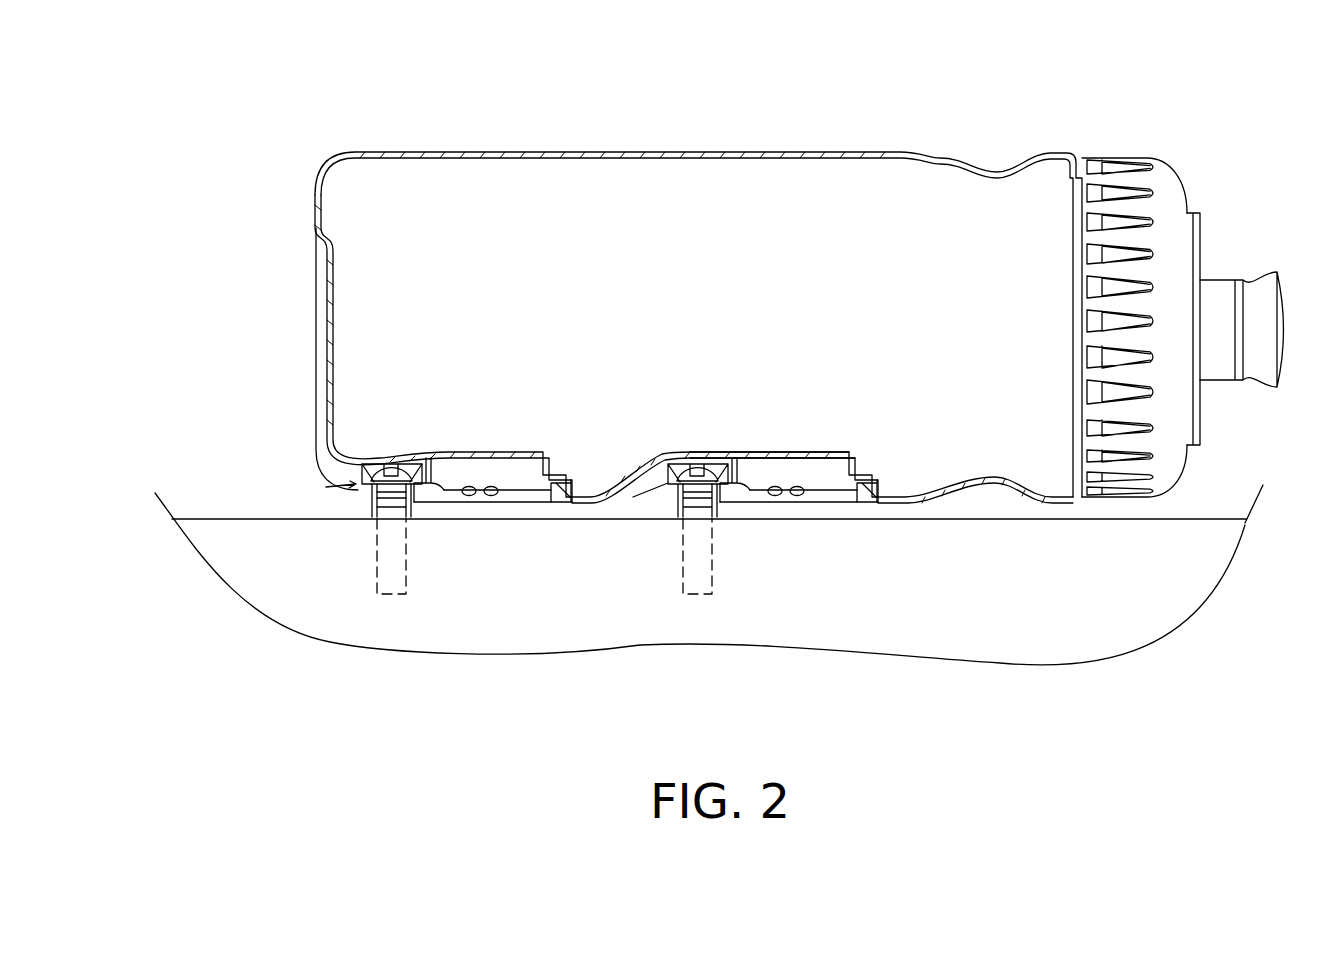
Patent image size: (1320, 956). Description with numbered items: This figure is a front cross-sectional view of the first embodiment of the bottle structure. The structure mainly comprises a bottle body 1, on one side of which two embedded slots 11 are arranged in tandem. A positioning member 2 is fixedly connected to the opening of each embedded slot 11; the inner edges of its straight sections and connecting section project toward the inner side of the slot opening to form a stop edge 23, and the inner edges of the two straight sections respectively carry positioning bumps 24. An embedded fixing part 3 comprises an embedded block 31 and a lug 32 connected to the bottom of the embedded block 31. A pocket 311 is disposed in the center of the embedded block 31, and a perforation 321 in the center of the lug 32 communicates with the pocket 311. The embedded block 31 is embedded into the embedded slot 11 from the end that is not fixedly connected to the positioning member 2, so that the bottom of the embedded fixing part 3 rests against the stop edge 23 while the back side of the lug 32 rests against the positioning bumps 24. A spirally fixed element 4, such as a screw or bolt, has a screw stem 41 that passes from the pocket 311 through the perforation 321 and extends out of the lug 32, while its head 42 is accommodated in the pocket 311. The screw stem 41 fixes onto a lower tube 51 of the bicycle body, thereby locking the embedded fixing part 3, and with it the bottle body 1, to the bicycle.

The bottle body 1 is at (700, 152).
The embedded slot 11 is at (748, 473).
The positioning member 2 is at (870, 498).
The stop edge 23 is at (833, 497).
The positioning bumps 24 is at (797, 495).
The embedded fixing part 3 is at (357, 483).
The embedded block 31 is at (358, 482).
The pocket 311 is at (365, 470).
The lug 32 is at (374, 495).
The perforation 321 is at (388, 510).
The spirally fixed element 4 is at (416, 513).
The screw stem 41 is at (392, 510).
The head 42 is at (447, 484).
The lower tube 51 is at (1022, 637).